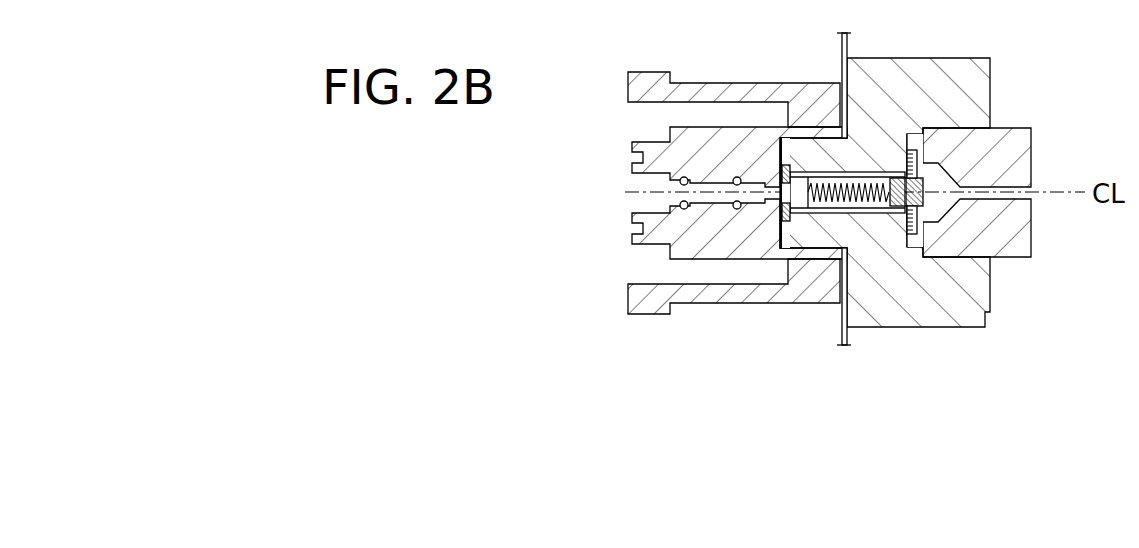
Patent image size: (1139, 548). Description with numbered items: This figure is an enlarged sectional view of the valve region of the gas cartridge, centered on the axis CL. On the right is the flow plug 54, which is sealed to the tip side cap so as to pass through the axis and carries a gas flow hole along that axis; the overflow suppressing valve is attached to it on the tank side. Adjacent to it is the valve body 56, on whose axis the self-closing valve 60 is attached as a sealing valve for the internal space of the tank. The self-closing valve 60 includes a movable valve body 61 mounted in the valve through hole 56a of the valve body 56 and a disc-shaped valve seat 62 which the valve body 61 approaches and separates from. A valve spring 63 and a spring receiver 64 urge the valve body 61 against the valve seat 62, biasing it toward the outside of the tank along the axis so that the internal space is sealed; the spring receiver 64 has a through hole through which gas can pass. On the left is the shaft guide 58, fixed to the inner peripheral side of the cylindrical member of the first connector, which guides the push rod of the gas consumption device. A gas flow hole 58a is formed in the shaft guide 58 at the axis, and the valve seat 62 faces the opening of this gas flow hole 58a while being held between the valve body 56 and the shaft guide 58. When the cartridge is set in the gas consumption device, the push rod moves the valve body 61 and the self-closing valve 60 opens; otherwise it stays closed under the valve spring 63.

The flow plug 54 is at (1007, 243).
The valve body 56 is at (960, 78).
The valve through hole 56a is at (910, 230).
The shaft guide 58 is at (713, 238).
The gas flow hole 58a is at (658, 190).
The self-closing valve 60 is at (873, 156).
The valve body 61 is at (787, 225).
The valve seat 62 is at (780, 165).
The valve spring 63 is at (830, 173).
The spring receiver 64 is at (926, 210).